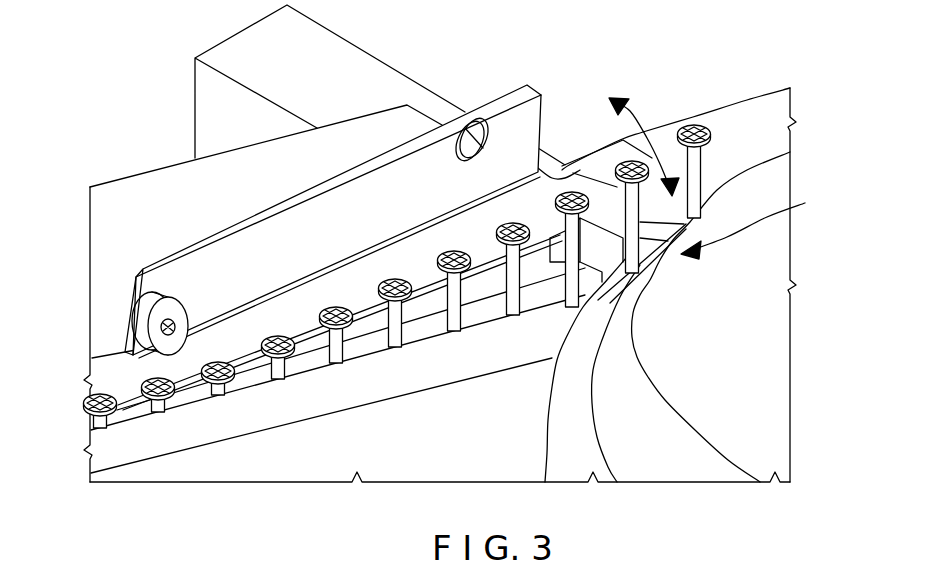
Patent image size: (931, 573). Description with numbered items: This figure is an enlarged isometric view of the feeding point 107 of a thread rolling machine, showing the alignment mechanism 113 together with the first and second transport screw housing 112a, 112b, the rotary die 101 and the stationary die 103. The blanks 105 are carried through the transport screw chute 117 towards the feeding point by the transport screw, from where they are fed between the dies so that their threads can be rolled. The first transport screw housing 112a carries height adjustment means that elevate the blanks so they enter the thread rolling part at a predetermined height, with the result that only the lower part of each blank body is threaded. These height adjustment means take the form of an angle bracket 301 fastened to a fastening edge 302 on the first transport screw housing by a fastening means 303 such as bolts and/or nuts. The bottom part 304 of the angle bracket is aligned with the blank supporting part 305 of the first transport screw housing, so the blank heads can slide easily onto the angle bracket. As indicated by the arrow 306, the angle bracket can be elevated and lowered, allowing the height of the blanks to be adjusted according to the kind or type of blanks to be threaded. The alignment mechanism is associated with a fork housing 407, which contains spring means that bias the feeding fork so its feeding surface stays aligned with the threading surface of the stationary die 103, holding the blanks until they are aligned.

The rotary die 101 is at (688, 452).
The stationary die 103 is at (750, 118).
The blanks 105 is at (397, 320).
The feeding point 107 is at (768, 225).
The first transport screw housing 112a is at (178, 178).
The second transport screw housing 112b is at (348, 388).
The alignment mechanism 113 is at (600, 257).
The transport screw chute 117 is at (262, 375).
The angle bracket 301 is at (423, 168).
The fastening edge 302 is at (110, 327).
The fastening means 303 is at (123, 290).
The bottom part 304 is at (197, 368).
The blank supporting part 305 is at (122, 383).
The arrow 306 is at (643, 123).
The fork housing 407 is at (230, 484).